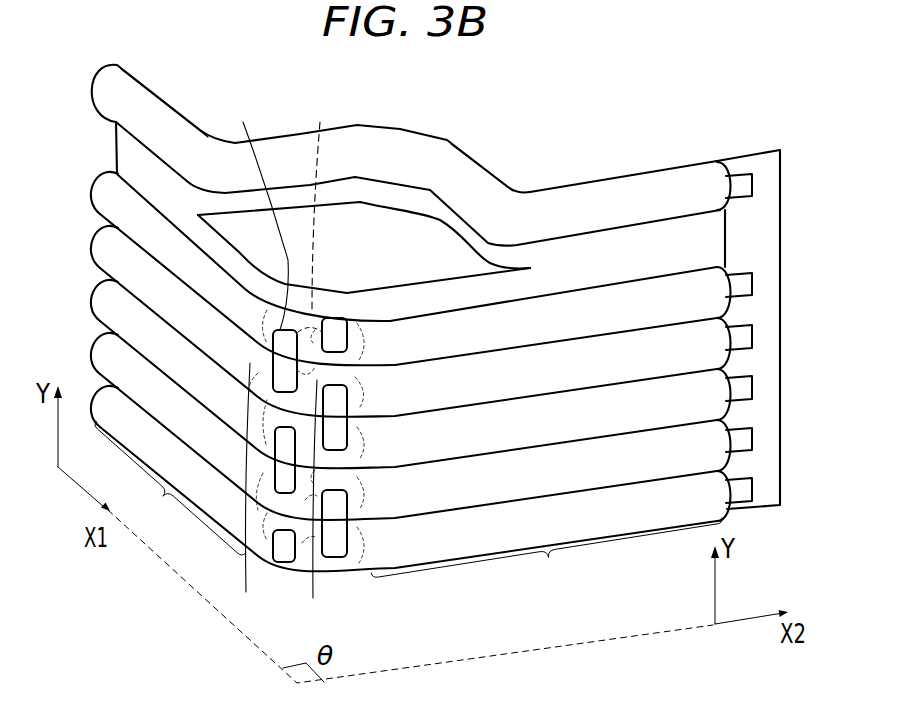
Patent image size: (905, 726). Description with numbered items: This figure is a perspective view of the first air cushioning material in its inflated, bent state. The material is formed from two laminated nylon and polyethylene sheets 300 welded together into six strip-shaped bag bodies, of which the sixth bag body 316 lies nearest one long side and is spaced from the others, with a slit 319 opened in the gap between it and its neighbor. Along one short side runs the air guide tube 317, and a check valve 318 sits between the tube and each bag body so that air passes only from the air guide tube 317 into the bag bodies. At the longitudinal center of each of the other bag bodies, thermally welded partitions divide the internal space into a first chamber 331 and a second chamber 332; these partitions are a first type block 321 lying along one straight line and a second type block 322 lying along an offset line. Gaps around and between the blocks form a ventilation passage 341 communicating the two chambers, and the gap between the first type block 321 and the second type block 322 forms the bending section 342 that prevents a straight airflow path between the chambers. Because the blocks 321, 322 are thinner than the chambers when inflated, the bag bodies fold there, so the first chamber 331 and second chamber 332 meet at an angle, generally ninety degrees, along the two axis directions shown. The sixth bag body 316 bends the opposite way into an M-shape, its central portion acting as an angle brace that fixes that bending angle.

The composite sheet 300 is at (411, 344).
The sixth bag body 316 is at (393, 150).
The air guide tube 317 is at (769, 170).
The check valve 318 is at (740, 186).
The slit 319 is at (387, 290).
The first type block 321 is at (271, 465).
The second type block 322 is at (330, 475).
The first chamber 331 is at (170, 488).
The second chamber 332 is at (546, 559).
The ventilation passage 341 is at (254, 217).
The bending section 342 is at (317, 211).